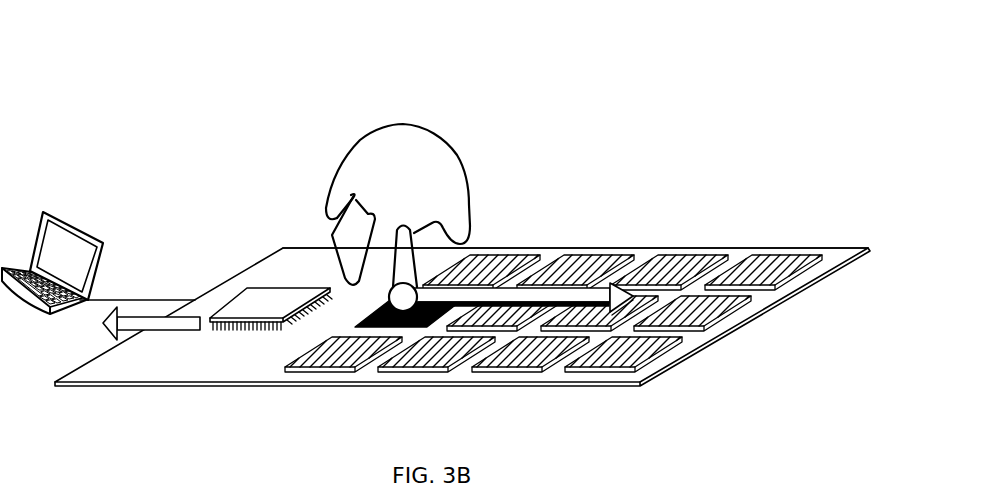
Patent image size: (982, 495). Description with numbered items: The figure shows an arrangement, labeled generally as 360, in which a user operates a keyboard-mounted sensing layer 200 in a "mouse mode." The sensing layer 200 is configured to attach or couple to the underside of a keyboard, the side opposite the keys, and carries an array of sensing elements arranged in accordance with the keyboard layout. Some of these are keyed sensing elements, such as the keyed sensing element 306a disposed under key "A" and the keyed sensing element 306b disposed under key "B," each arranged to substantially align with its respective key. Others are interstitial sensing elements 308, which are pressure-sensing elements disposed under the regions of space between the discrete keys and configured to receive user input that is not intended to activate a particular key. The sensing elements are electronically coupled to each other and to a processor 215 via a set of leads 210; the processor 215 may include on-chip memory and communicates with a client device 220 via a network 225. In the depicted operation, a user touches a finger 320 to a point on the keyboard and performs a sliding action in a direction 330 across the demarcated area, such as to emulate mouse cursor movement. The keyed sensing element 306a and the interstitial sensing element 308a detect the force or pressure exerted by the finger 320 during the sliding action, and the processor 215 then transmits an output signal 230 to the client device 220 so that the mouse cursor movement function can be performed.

The touch sensing system 360 is at (78, 70).
The client device 220 is at (73, 217).
The network 225 is at (84, 301).
The output signal 230 is at (177, 331).
The processor 215 is at (280, 287).
The sensing layer 200 is at (533, 248).
The set of leads 210 is at (718, 341).
The interstitial sensing elements 308 is at (787, 258).
The interstitial sensing element 308a is at (522, 326).
The keyed sensing element 306a is at (373, 313).
The keyed sensing element 306b is at (623, 313).
The finger 320 is at (425, 256).
The direction 330 is at (577, 258).